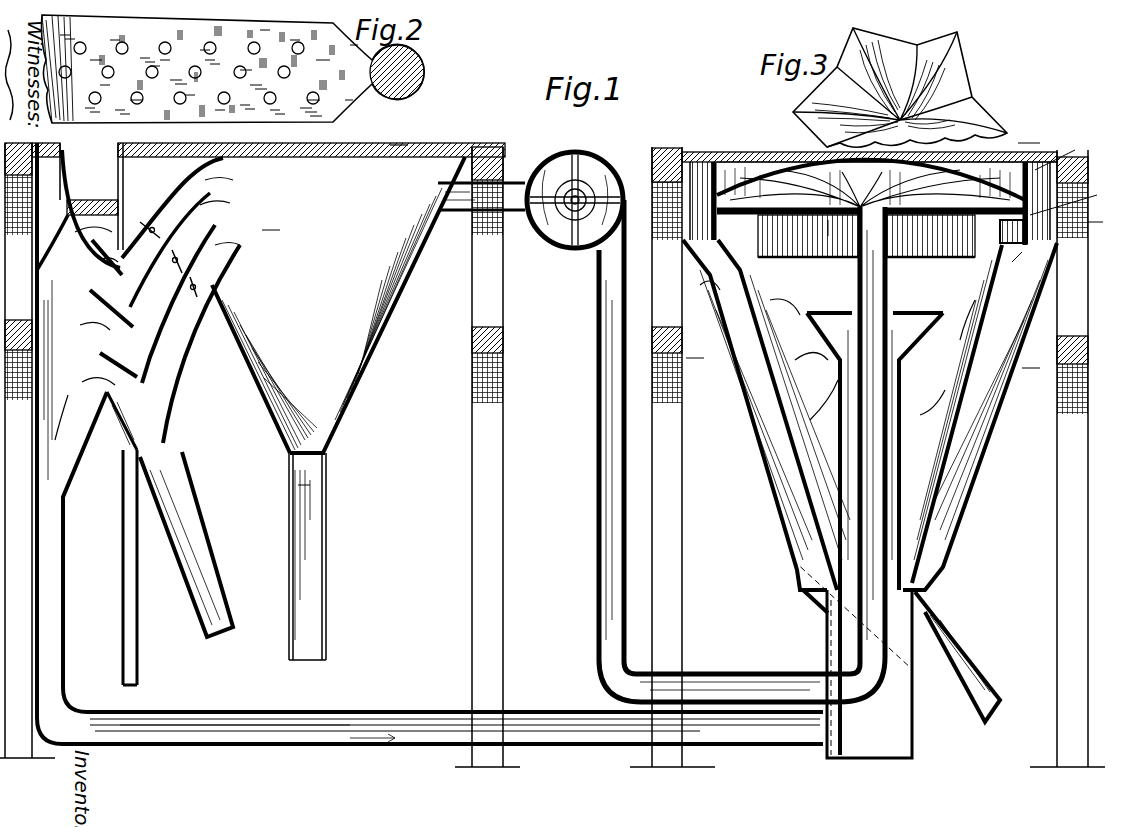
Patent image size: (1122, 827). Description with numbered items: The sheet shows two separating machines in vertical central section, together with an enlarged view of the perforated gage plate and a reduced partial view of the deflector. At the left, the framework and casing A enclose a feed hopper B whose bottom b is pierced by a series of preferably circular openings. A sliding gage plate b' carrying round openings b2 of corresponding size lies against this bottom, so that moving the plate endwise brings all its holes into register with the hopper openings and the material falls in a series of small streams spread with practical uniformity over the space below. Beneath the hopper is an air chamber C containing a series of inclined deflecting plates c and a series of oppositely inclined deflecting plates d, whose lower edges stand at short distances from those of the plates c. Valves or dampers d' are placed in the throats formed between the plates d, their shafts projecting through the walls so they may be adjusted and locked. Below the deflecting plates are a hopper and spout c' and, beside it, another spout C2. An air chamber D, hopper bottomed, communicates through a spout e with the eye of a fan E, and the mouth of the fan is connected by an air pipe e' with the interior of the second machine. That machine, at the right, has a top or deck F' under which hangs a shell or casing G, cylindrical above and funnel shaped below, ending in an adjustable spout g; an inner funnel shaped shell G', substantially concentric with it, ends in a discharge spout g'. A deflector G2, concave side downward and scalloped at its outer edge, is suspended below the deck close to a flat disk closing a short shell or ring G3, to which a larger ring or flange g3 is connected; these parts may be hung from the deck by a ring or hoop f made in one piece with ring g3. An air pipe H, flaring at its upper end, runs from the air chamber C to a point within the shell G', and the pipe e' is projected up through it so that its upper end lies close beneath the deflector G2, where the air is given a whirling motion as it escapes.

In FIG. 1, the framework and casing A is at (260, 441).
In FIG. 1, the feed hopper B is at (91, 196).
In FIG. 1, the hopper bottom openings b is at (78, 210).
In FIG. 2, the sliding gage plate b' is at (233, 69).
In FIG. 1, the sliding gage plate b' is at (92, 196).
In FIG. 2, the gage plate openings b2 is at (189, 68).
In FIG. 1, the air chamber C is at (430, 443).
In FIG. 1, the inclined deflecting plates c is at (96, 333).
In FIG. 1, the hopper and spout c' is at (443, 552).
In FIG. 1, the spout C2 is at (186, 544).
In FIG. 1, the air chamber D is at (338, 408).
In FIG. 1, the oppositely inclined deflecting plates d is at (172, 270).
In FIG. 1, the valves or dampers d' is at (185, 311).
In FIG. 1, the fan E is at (575, 200).
In FIG. 1, the spout e is at (481, 196).
In FIG. 1, the air pipe e' is at (742, 451).
In FIG. 1, the top or deck F' is at (867, 441).
In FIG. 1, the ring or hoop f is at (1055, 187).
In FIG. 1, the shell or casing G is at (870, 426).
In FIG. 1, the inner funnel shaped shell G' is at (860, 415).
In FIG. 3, the deflector G2 is at (900, 87).
In FIG. 1, the deflector G2 is at (885, 202).
In FIG. 1, the short shell or ring G3 is at (866, 242).
In FIG. 3, the ring or flange g3 is at (895, 119).
In FIG. 1, the ring or flange g3 is at (870, 221).
In FIG. 1, the adjustable spout g is at (1017, 466).
In FIG. 1, the discharge spout g' is at (853, 659).
In FIG. 1, the air pipe H is at (516, 533).